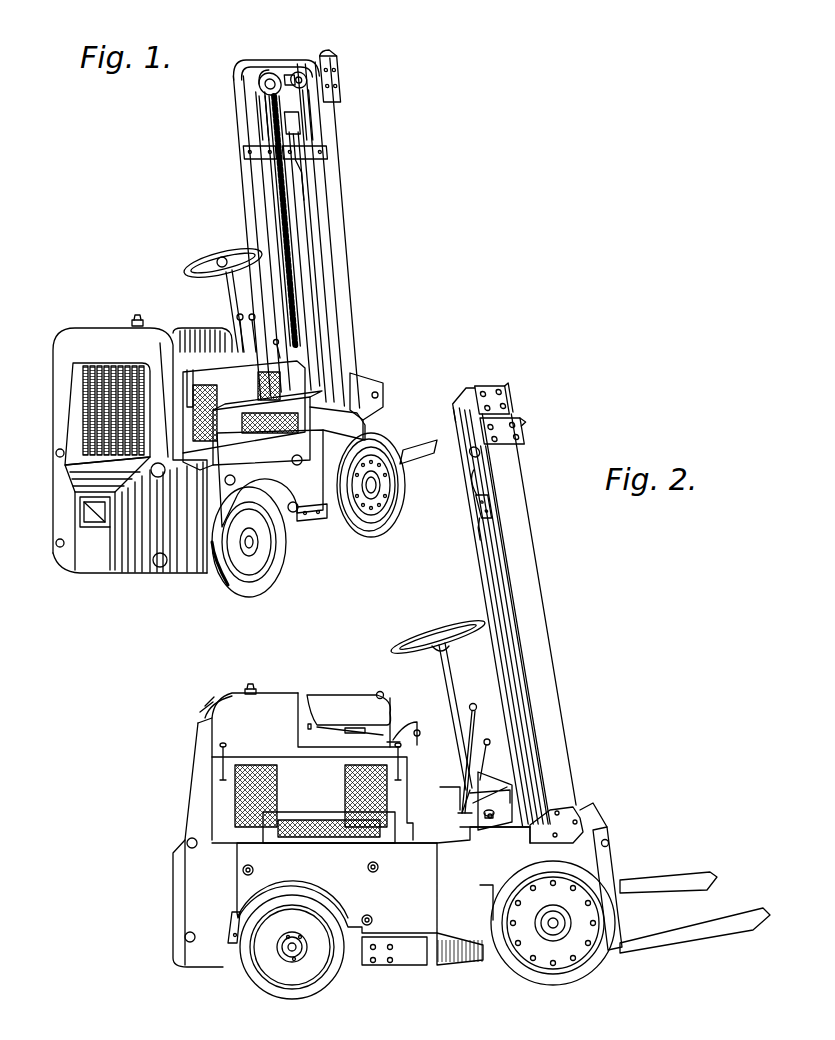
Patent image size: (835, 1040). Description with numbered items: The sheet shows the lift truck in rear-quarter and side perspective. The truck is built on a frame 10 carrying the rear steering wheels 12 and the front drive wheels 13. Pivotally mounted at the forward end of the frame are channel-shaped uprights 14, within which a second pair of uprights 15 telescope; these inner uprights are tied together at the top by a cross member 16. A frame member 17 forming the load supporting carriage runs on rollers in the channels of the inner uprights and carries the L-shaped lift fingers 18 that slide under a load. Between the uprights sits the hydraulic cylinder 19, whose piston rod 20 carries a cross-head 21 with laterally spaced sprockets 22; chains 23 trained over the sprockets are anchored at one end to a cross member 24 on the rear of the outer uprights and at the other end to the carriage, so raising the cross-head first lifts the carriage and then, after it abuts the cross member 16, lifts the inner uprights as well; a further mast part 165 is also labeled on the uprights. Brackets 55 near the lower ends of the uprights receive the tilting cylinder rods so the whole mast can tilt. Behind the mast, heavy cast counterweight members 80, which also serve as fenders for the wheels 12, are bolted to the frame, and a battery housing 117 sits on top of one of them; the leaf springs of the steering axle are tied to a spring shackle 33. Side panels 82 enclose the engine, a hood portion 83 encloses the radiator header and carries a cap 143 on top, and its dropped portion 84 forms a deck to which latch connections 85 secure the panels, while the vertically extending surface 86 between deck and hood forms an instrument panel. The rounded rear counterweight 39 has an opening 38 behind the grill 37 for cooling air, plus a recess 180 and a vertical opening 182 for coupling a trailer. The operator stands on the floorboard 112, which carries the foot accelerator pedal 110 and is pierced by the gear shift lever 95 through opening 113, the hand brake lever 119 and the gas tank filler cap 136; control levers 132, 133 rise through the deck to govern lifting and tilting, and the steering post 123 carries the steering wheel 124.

In FIG. 1, the frame 10 is at (293, 544).
In FIG. 2, the frame 10 is at (417, 976).
In FIG. 1, the rear steering wheels 12 is at (262, 580).
In FIG. 2, the rear steering wheels 12 is at (283, 986).
In FIG. 1, the front drive wheels 13 is at (368, 528).
In FIG. 2, the front drive wheels 13 is at (520, 970).
In FIG. 1, the channel-shaped uprights 14 is at (243, 180).
In FIG. 2, the channel-shaped uprights 14 is at (523, 558).
In FIG. 1, the second pair of uprights 15 is at (312, 64).
In FIG. 1, the cross member 16 is at (314, 52).
In FIG. 2, the cross member 16 is at (468, 400).
In FIG. 1, the frame member / load supporting carriage 17 is at (362, 381).
In FIG. 2, the frame member / load supporting carriage 17 is at (596, 826).
In FIG. 1, the L-shaped lift fingers 18 is at (407, 450).
In FIG. 2, the L-shaped lift fingers 18 is at (666, 925).
In FIG. 1, the hydraulic cylinder 19 is at (297, 238).
In FIG. 1, the piston rod 20 is at (262, 110).
In FIG. 1, the cross-head 21 is at (256, 90).
In FIG. 1, the sprockets 22 is at (300, 93).
In FIG. 1, the chains / tension members 23 is at (256, 136).
In FIG. 1, the cross member 24 is at (320, 153).
In FIG. 2, the spring shackle 33 is at (235, 948).
In FIG. 1, the grill 37 is at (110, 387).
In FIG. 1, the opening 38 is at (75, 418).
In FIG. 1, the rear counterweight member 39 is at (126, 580).
In FIG. 2, the rear counterweight member 39 is at (196, 808).
In FIG. 2, the brackets 55 is at (566, 800).
In FIG. 1, the counterweight members 80 is at (312, 502).
In FIG. 2, the counterweight members 80 is at (385, 950).
In FIG. 1, the side panels 82 is at (293, 384).
In FIG. 2, the side panels 82 is at (216, 826).
In FIG. 2, the hood portion 83 is at (231, 693).
In FIG. 2, the dropped portion / deck 84 is at (408, 730).
In FIG. 1, the latch connections 85 is at (258, 385).
In FIG. 2, the latch connections 85 is at (220, 762).
In FIG. 2, the vertically extending surface 86 is at (302, 695).
In FIG. 2, the gear shift lever 95 is at (476, 710).
In FIG. 2, the foot accelerator pedal 110 is at (494, 822).
In FIG. 2, the floorboard 112 is at (455, 790).
In FIG. 2, the opening 113 is at (467, 818).
In FIG. 1, the battery housing 117 is at (230, 440).
In FIG. 2, the hand brake lever 119 is at (486, 740).
In FIG. 2, the steering post 123 is at (449, 664).
In FIG. 1, the steering wheel 124 is at (230, 250).
In FIG. 2, the steering wheel 124 is at (437, 631).
In FIG. 1, the control lever 132 is at (248, 340).
In FIG. 1, the control lever 133 is at (250, 337).
In FIG. 2, the filler opening and cap 136 is at (488, 820).
In FIG. 1, the filler cap 143 is at (138, 316).
In FIG. 2, the filler cap 143 is at (251, 686).
In FIG. 1, the chain anchor 165 is at (288, 208).
In FIG. 2, the chain anchor 165 is at (470, 519).
In FIG. 1, the recess 180 is at (86, 514).
In FIG. 1, the vertically extending opening 182 is at (86, 483).